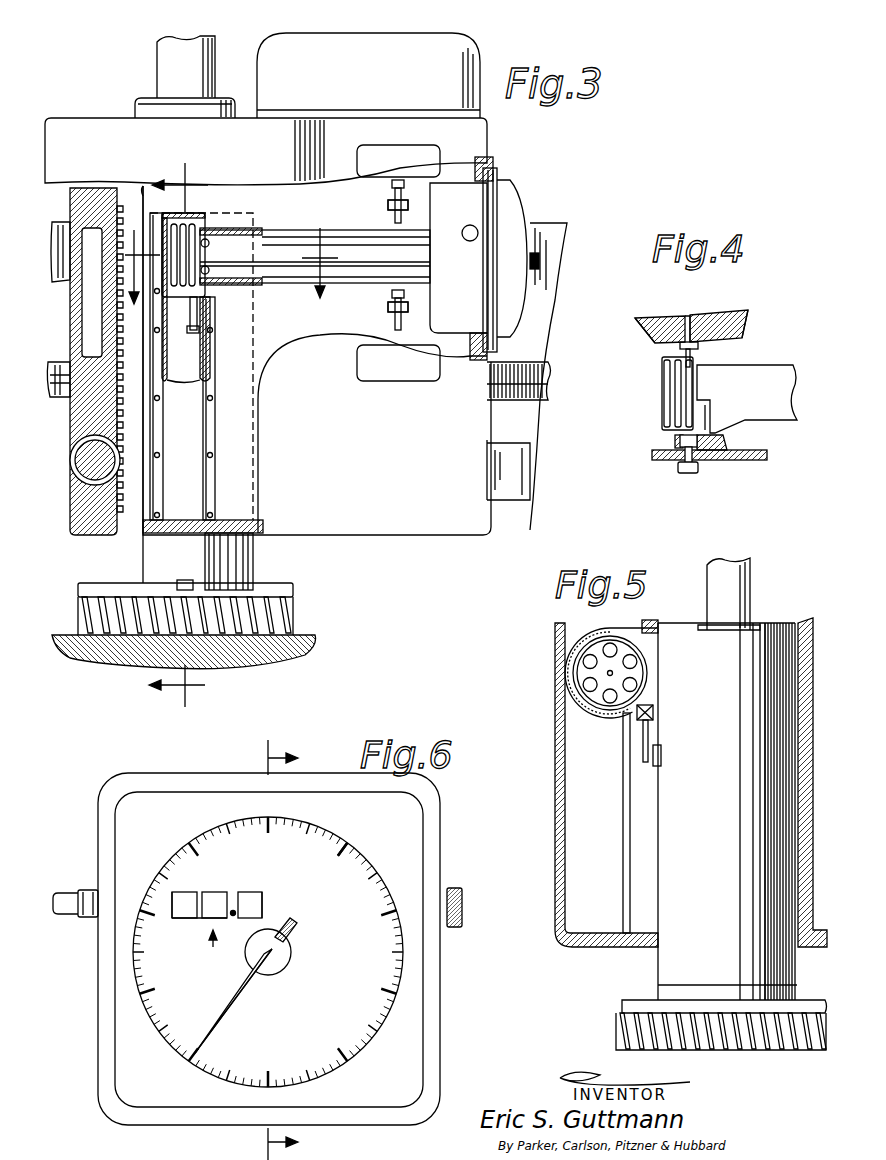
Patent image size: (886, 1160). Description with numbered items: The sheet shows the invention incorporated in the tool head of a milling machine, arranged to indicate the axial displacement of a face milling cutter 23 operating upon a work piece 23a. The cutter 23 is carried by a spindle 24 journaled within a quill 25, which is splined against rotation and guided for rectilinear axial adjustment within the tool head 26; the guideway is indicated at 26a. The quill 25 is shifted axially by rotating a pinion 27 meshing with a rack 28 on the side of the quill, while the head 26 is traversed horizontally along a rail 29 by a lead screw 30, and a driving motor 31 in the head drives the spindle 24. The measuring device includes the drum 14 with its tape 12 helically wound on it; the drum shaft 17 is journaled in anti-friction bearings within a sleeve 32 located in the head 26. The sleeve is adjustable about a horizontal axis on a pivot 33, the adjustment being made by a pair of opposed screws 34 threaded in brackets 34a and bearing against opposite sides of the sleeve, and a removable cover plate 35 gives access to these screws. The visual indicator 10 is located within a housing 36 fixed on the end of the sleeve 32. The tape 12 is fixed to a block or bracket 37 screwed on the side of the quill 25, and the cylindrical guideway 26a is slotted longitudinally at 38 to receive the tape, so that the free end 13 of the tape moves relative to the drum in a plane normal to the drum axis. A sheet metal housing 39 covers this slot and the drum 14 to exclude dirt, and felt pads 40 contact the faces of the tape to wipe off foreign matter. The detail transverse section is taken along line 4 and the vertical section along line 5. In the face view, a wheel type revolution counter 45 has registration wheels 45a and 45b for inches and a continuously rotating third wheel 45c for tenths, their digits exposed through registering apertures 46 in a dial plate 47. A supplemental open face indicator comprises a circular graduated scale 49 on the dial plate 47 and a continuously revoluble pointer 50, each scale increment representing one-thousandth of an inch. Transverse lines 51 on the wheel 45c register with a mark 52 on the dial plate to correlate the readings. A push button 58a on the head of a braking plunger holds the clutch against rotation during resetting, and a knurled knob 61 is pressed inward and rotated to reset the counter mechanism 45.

In FIG. 3, the visual indicator 10 is at (529, 214).
In FIG. 6, the visual indicator 10 is at (458, 828).
In FIG. 3, the tape 12 is at (197, 308).
In FIG. 4, the tape 12 is at (691, 362).
In FIG. 5, the tape 12 is at (650, 731).
In FIG. 3, the free end of the tape 13 is at (188, 335).
In FIG. 3, the drum 14 is at (195, 292).
In FIG. 4, the drum 14 is at (663, 399).
In FIG. 5, the drum 14 is at (638, 663).
In FIG. 3, the drum shaft 17 is at (278, 263).
In FIG. 3, the face milling cutter 23 is at (288, 620).
In FIG. 5, the face milling cutter 23 is at (623, 1026).
In FIG. 3, the work piece 23a is at (293, 656).
In FIG. 3, the spindle 24 is at (253, 568).
In FIG. 3, the quill 25 is at (118, 552).
In FIG. 4, the quill 25 is at (658, 343).
In FIG. 5, the quill 25 is at (667, 964).
In FIG. 3, the tool head 26 is at (455, 535).
In FIG. 4, the tool head 26 is at (660, 348).
In FIG. 5, the tool head 26 is at (557, 840).
In FIG. 3, the guideway 26a is at (120, 528).
In FIG. 4, the guideway 26a is at (738, 313).
In FIG. 5, the guideway 26a is at (785, 643).
In FIG. 3, the pinion 27 is at (120, 462).
In FIG. 3, the rack 28 is at (120, 487).
In FIG. 3, the rail 29 is at (524, 456).
In FIG. 3, the lead screw 30 is at (540, 368).
In FIG. 3, the driving motor 31 is at (447, 53).
In FIG. 3, the sleeve 32 is at (273, 232).
In FIG. 4, the sleeve 32 is at (770, 373).
In FIG. 3, the pivot 33 is at (201, 356).
In FIG. 4, the pivot 33 is at (678, 441).
In FIG. 3, the opposed screws 34 is at (393, 188).
In FIG. 3, the brackets 34a is at (392, 205).
In FIG. 3, the removable cover plate 35 is at (410, 157).
In FIG. 3, the indicator housing 36 is at (452, 318).
In FIG. 3, the block or bracket 37 is at (193, 333).
In FIG. 4, the block or bracket 37 is at (689, 342).
In FIG. 5, the block or bracket 37 is at (662, 757).
In FIG. 4, the slot 38 is at (700, 343).
In FIG. 5, the slot 38 is at (655, 860).
In FIG. 3, the sheet metal housing 39 is at (198, 417).
In FIG. 5, the sheet metal housing 39 is at (625, 779).
In FIG. 5, the pads 40 is at (653, 709).
In FIG. 6, the revolution counter 45 is at (202, 952).
In FIG. 6, the registration wheel 45a is at (172, 897).
In FIG. 6, the registration wheel 45b is at (207, 918).
In FIG. 6, the tenths wheel 45c is at (268, 952).
In FIG. 6, the registering apertures 46 is at (186, 889).
In FIG. 6, the dial plate 47 is at (412, 990).
In FIG. 6, the circular graduated scale 49 is at (350, 853).
In FIG. 6, the pointer 50 is at (236, 992).
In FIG. 6, the transverse lines 51 is at (264, 903).
In FIG. 6, the mark 52 is at (279, 928).
In FIG. 3, the push button 58a is at (470, 241).
In FIG. 6, the push button 58a is at (70, 918).
In FIG. 6, the knurled knob 61 is at (455, 920).
In FIG. 3, the section line 4- 4 is at (231, 265).
In FIG. 3, the section line 5- 5 is at (181, 435).